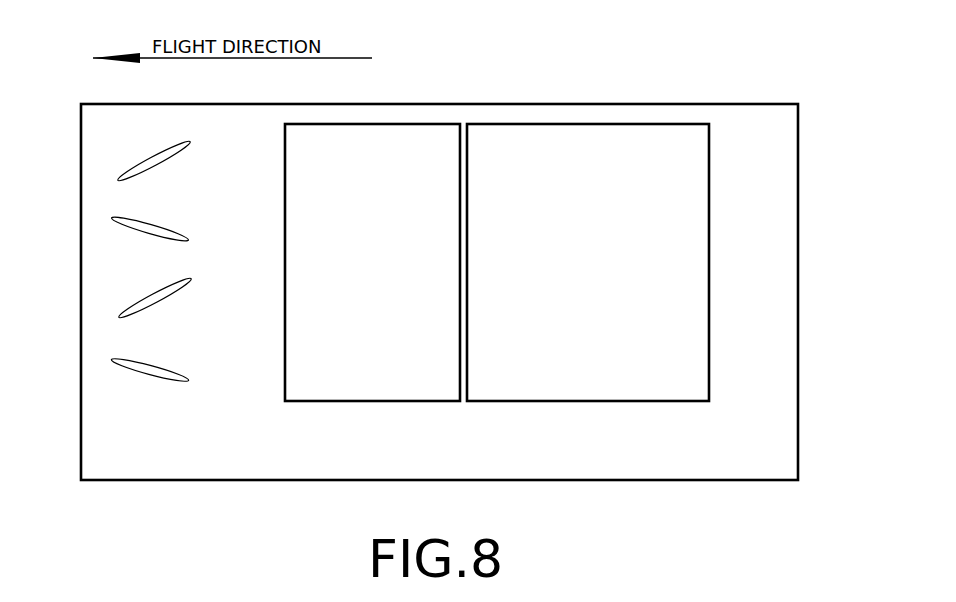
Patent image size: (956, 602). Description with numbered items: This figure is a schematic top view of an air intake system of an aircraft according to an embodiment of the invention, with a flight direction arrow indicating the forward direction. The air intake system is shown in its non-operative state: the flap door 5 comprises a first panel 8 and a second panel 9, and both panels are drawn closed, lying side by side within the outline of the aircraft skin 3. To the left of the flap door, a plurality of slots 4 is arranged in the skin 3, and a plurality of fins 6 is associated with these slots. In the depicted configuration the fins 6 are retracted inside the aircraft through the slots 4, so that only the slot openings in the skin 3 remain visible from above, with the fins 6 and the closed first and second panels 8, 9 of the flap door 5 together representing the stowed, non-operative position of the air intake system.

The skin 3 is at (618, 457).
The slots 4 is at (188, 182).
The flap door 5 is at (413, 137).
The fins 6 is at (143, 170).
The first panel 8 is at (372, 262).
The second panel 9 is at (588, 262).